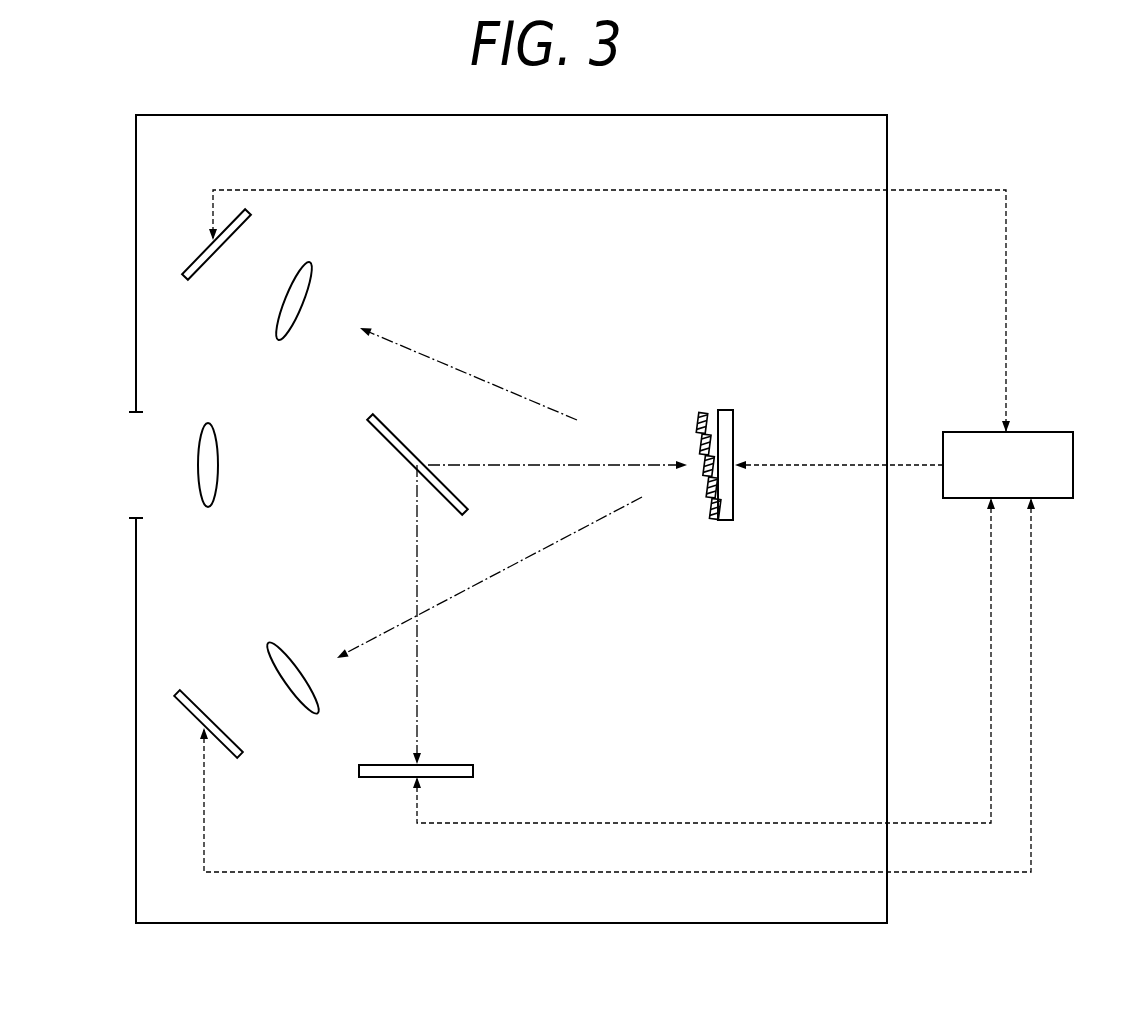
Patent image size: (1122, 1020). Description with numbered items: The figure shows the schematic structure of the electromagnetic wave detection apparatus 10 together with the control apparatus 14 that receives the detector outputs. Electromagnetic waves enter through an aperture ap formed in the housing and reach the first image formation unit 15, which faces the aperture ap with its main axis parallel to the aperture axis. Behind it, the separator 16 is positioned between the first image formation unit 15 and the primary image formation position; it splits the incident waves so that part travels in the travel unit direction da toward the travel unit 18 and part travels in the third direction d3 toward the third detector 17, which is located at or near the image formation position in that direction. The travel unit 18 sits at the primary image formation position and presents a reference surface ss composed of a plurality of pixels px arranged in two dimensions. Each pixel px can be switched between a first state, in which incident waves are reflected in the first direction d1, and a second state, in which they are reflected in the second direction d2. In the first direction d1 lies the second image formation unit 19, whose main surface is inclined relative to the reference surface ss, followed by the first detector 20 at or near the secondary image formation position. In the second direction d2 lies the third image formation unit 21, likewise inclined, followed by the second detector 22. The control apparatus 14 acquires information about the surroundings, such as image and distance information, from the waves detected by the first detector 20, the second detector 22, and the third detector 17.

The electromagnetic wave detection apparatus 10 is at (216, 113).
The control apparatus 14 is at (967, 500).
The first image formation unit 15 is at (208, 423).
The separator 16 is at (388, 430).
The third detector 17 is at (473, 771).
The travel unit 18 is at (727, 522).
The second image formation unit 19 is at (270, 645).
The first detector 20 is at (196, 703).
The third image formation unit 21 is at (310, 262).
The second detector 22 is at (208, 258).
The aperture ap is at (133, 462).
The pixel px is at (700, 425).
The reference surface ss is at (723, 412).
The travel unit direction da is at (495, 463).
The first direction d1 is at (507, 569).
The second direction d2 is at (482, 378).
The third direction d3 is at (417, 690).